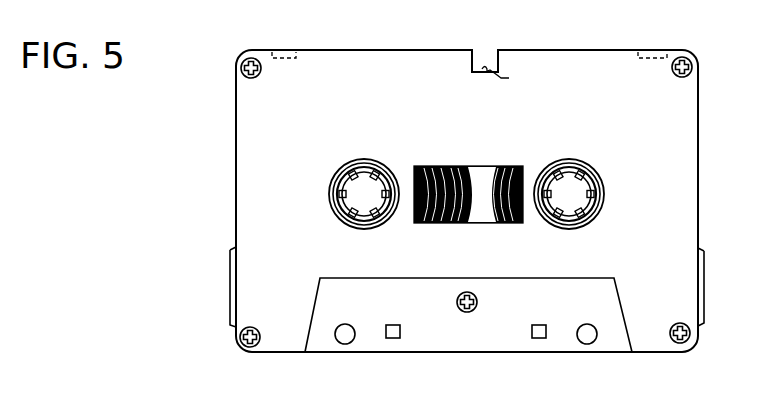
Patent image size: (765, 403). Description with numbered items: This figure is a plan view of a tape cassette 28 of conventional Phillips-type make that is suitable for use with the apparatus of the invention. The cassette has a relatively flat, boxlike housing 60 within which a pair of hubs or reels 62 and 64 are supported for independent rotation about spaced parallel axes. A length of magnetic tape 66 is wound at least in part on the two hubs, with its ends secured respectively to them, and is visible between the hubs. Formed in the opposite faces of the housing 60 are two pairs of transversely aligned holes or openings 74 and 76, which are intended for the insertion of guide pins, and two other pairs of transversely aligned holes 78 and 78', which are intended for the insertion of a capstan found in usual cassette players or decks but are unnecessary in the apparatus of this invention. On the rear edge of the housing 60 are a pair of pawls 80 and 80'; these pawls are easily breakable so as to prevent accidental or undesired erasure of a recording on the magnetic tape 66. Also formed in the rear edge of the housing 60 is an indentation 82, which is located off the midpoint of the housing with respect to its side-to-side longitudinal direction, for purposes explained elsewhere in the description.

The tape cassette 28 is at (699, 186).
The housing 60 is at (244, 146).
The hub 62 is at (570, 172).
The hub 64 is at (363, 172).
The magnetic tape 66 is at (493, 166).
The opening 74 is at (393, 338).
The opening 76 is at (539, 338).
The hole 78 is at (346, 356).
The hole 78' is at (599, 356).
The pawl 80 is at (300, 35).
The pawl 80' is at (655, 32).
The indentation 82 is at (508, 73).